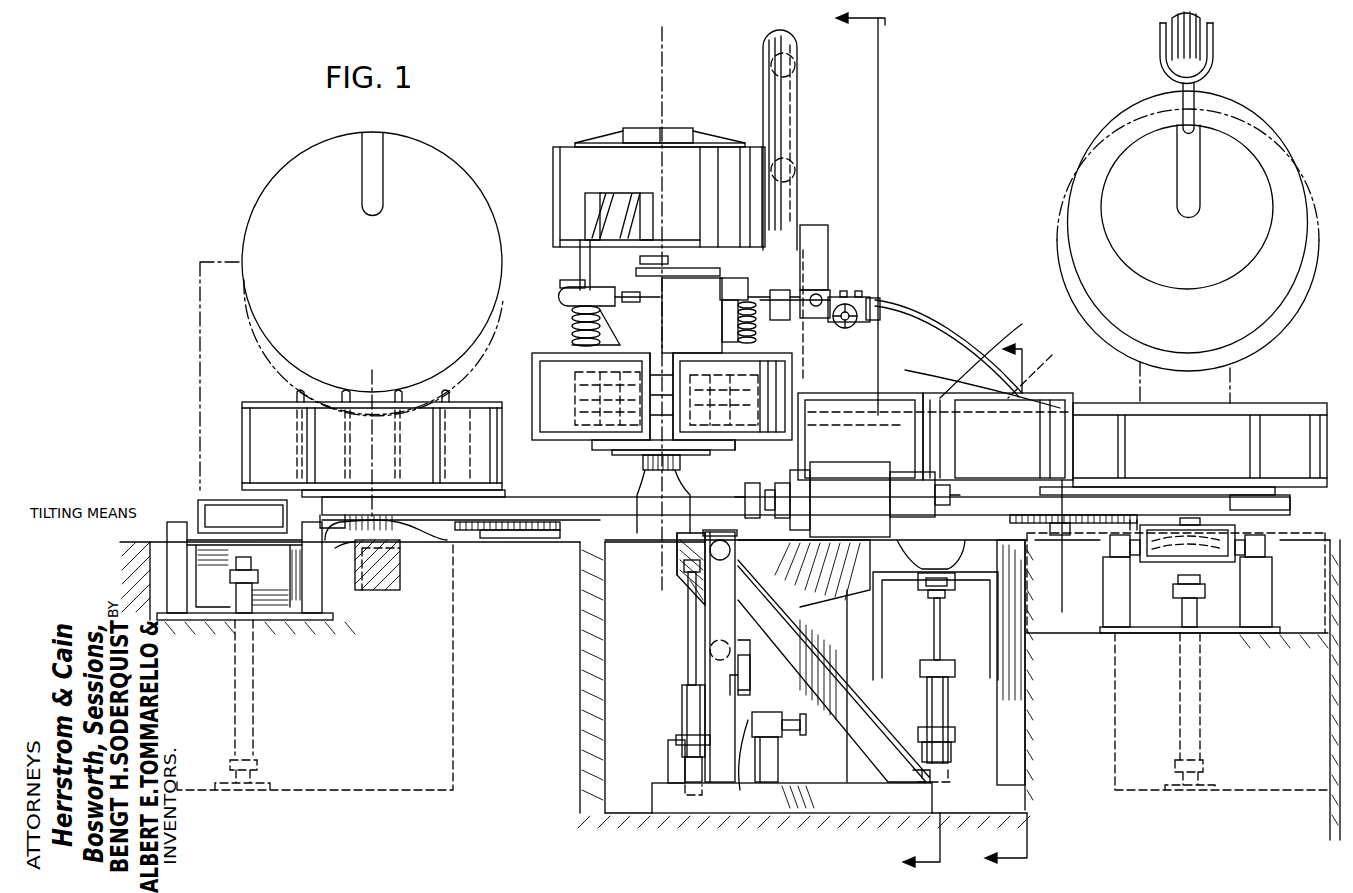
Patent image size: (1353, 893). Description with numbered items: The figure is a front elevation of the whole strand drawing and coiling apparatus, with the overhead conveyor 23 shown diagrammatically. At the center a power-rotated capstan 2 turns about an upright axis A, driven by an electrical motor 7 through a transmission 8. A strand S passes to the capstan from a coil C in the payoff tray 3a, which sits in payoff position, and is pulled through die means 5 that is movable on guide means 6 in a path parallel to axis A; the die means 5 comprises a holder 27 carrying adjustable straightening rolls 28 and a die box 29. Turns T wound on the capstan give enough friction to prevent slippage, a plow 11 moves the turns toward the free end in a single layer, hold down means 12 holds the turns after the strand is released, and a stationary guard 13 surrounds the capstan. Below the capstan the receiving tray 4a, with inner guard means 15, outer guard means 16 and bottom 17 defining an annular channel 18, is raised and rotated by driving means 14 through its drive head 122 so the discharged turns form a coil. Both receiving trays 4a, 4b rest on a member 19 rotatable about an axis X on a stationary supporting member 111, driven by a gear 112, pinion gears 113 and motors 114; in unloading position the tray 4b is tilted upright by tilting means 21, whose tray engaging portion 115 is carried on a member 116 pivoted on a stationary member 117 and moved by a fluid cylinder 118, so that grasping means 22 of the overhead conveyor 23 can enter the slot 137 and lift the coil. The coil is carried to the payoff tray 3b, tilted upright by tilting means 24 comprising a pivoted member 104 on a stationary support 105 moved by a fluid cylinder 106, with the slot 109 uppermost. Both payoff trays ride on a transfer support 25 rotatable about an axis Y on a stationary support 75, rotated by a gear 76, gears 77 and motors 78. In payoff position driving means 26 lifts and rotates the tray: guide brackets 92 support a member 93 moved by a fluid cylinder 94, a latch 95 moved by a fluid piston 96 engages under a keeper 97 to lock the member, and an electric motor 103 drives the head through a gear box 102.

The capstan 2 is at (575, 332).
The payoff tray 3a is at (900, 396).
The payoff tray 3b is at (1312, 196).
The receiving tray 4a is at (556, 394).
The receiving tray 4b is at (445, 156).
The die means 5 is at (935, 318).
The guide means 6 is at (765, 92).
The electrical motor 7 is at (1017, 606).
The transmission 8 is at (553, 200).
The plow 11 is at (757, 268).
The hold down means 12 is at (705, 330).
The stationary guard 13 is at (800, 382).
The driving means 14 is at (670, 581).
The inner guard means 15 is at (300, 392).
The outer guard means 16 is at (272, 423).
The bottom 17 is at (578, 432).
The annular channel 18 is at (763, 436).
The member 19 is at (443, 518).
The tilting means 21 is at (196, 508).
The grasping means 22 is at (1215, 68).
The overhead conveyor 23 is at (1170, 12).
The tilting means 24 is at (1244, 528).
The transfer support 25 is at (1280, 509).
The driving means 26 is at (912, 560).
The holder 27 is at (870, 300).
The straightening rolls 28 is at (845, 292).
The die box 29 is at (818, 296).
The stationary support 75 is at (1072, 545).
The gear 76 is at (1068, 512).
The gears 77 is at (1130, 518).
The motors 78 is at (1138, 530).
The guide brackets 92 is at (722, 715).
The member 93 is at (706, 620).
The fluid cylinder 94 is at (684, 708).
The latch 95 is at (742, 805).
The fluid piston 96 is at (796, 730).
The keeper 97 is at (743, 693).
The gear box 102 is at (682, 532).
The electric motor 103 is at (830, 476).
The pivoted member 104 is at (1236, 560).
The stationary support 105 is at (1262, 610).
The fluid cylinder 106 is at (1205, 726).
The slot 109 is at (1202, 155).
The stationary supporting member 111 is at (542, 562).
The gear 112 is at (512, 532).
The pinion gears 113 is at (600, 556).
The motors 114 is at (582, 540).
The tray engaging portion 115 is at (440, 540).
The member 116 is at (350, 600).
The stationary member 117 is at (172, 605).
The fluid cylinder 118 is at (254, 688).
The drive head 122 is at (655, 464).
The slot 137 is at (362, 166).
The axis A is at (661, 112).
The coil C is at (998, 409).
The strand S is at (975, 343).
The turns T is at (560, 297).
The axis X is at (378, 570).
The axis Y is at (1062, 598).